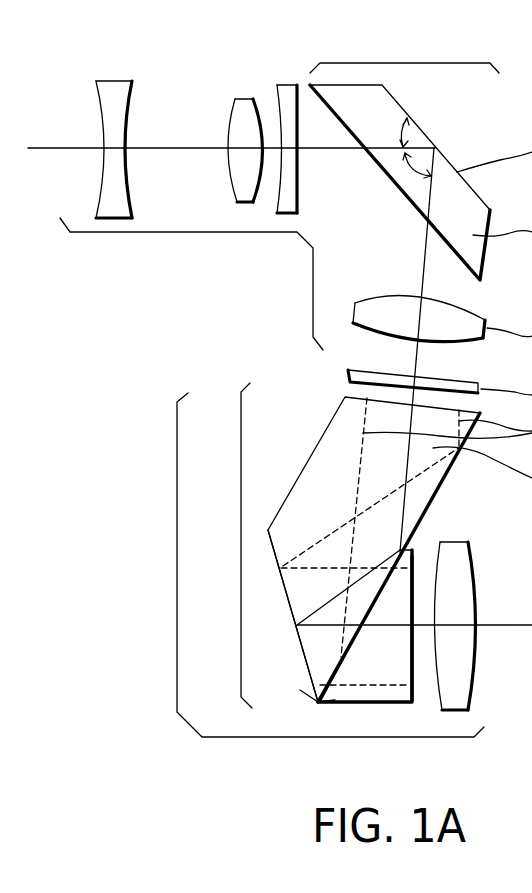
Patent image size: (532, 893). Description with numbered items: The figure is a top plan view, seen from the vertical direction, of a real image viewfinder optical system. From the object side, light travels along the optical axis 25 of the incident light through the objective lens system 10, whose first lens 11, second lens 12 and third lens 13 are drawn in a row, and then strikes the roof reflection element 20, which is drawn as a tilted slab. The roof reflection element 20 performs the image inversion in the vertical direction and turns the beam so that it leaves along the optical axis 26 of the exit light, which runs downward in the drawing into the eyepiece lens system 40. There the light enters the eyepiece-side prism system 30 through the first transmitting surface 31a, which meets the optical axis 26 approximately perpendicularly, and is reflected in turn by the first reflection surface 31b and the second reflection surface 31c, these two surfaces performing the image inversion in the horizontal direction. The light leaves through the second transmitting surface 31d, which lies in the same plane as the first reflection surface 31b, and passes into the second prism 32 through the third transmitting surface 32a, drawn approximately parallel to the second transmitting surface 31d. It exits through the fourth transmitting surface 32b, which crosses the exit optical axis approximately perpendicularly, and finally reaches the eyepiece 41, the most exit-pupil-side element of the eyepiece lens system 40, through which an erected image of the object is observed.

The objective lens system 10 is at (191, 194).
The first lens 11 is at (114, 83).
The second lens 12 is at (242, 98).
The third lens 13 is at (283, 85).
The roof reflection element 20 is at (421, 159).
The optical axis of the incident light 25 is at (331, 150).
The optical axis of the exit light 26 is at (425, 262).
The eyepiece-side prism system 30 is at (365, 534).
The first transmitting surface 31a is at (346, 394).
The first reflection surface 31b is at (435, 490).
The second reflection surface 31c is at (287, 608).
The second transmitting surface 31d is at (330, 678).
The second prism 32 is at (421, 647).
The third transmitting surface 32a is at (418, 556).
The fourth transmitting surface 32b is at (415, 687).
The eyepiece lens system 40 is at (331, 534).
The eyepiece 41 is at (465, 690).